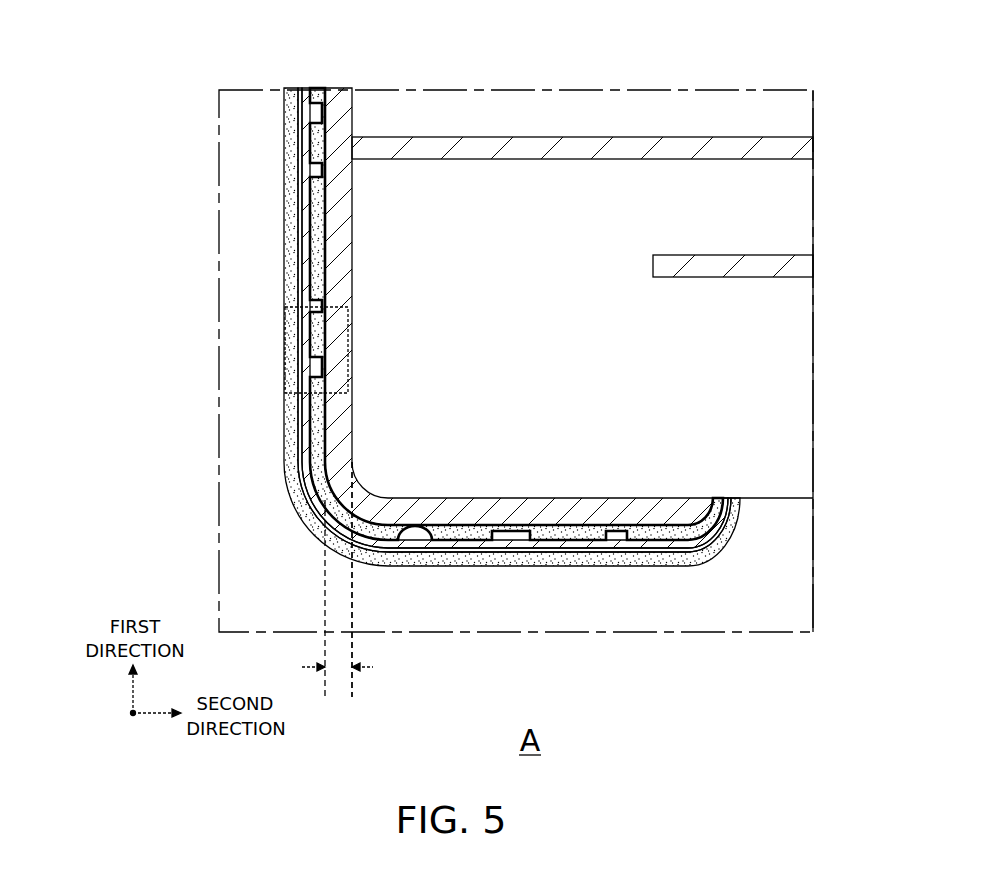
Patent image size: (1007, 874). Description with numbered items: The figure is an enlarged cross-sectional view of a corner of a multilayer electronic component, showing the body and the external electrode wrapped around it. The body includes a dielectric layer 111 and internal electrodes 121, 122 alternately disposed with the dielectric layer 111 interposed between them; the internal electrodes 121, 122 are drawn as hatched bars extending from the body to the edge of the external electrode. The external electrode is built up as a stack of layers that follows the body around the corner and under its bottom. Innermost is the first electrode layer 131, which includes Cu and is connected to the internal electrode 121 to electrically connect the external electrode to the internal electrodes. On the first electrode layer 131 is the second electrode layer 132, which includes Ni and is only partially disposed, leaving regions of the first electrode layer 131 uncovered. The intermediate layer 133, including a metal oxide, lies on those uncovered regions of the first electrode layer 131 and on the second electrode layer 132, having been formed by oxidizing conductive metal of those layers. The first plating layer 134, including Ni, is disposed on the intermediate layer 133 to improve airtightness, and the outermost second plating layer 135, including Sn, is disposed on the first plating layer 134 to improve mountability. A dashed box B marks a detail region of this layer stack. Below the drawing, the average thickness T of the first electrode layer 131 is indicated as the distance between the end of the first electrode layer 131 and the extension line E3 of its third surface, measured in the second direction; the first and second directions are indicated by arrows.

The dielectric layer 111 is at (737, 205).
The internal electrode 121 is at (530, 140).
The internal electrode 122 is at (693, 265).
The first electrode layer 131 is at (333, 195).
The second electrode layer 132 is at (317, 222).
The intermediate layer 133 is at (301, 284).
The first plating layer 134 is at (306, 253).
The second plating layer 135 is at (295, 416).
The region B is at (287, 333).
The extension line of the third surface E3 is at (352, 648).
The average thickness of the first electrode layer T is at (337, 680).